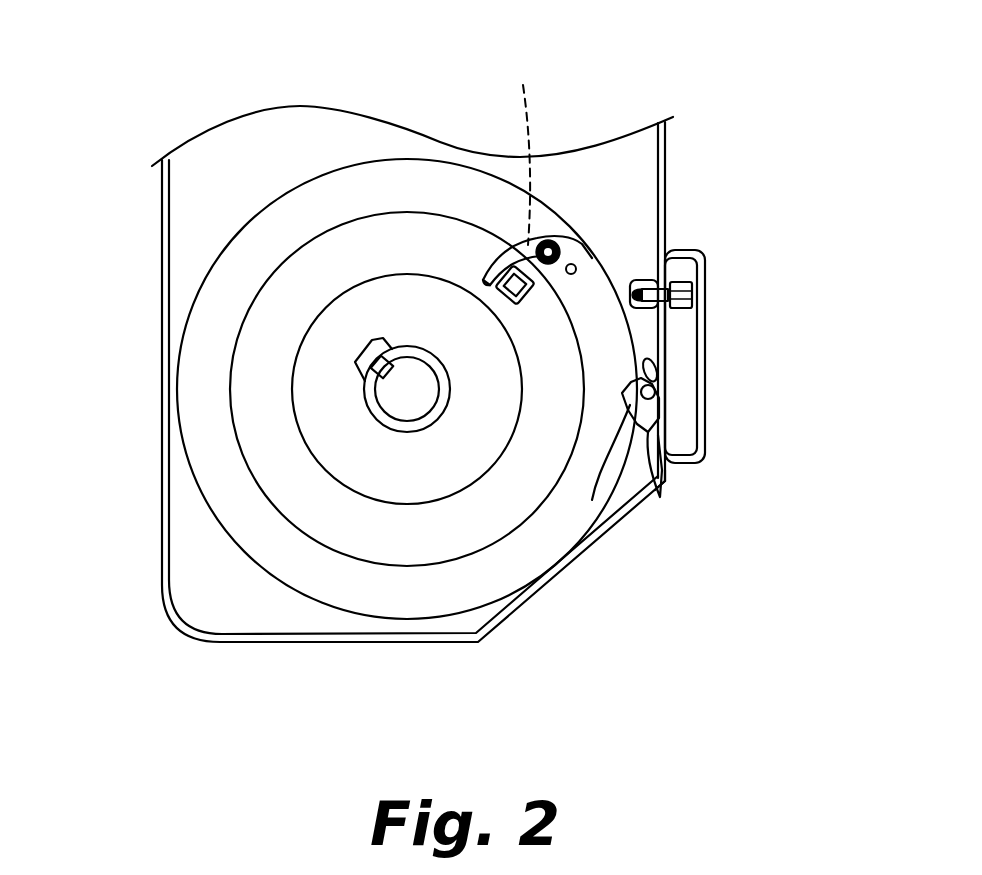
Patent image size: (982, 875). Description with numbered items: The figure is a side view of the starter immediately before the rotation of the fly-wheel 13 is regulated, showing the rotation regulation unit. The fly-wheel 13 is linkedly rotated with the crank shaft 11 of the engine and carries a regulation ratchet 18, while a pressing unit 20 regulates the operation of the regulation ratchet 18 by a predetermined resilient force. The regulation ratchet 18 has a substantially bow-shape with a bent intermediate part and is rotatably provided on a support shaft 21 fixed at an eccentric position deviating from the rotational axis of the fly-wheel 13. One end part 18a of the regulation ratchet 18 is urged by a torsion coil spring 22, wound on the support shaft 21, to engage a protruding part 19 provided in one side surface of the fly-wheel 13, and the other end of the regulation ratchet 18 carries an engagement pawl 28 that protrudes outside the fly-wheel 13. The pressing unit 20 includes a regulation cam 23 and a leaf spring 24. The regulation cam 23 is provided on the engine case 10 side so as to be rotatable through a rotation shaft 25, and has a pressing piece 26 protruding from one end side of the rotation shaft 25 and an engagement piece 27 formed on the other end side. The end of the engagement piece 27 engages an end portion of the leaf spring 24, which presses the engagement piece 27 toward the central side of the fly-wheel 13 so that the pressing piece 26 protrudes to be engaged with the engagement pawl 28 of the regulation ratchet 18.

The engine case 10 is at (617, 535).
The crank shaft 11 is at (407, 397).
The fly-wheel 13 is at (305, 178).
The regulation ratchet 18 is at (522, 247).
The one end part of the regulation ratchet 18a is at (495, 262).
The protruding part 19 is at (503, 297).
The pressing unit 20 is at (807, 353).
The support shaft 21 is at (552, 242).
The torsion coil spring 22 is at (523, 147).
The regulation cam 23 is at (656, 410).
The leaf spring 24 is at (668, 388).
The rotation shaft 25 is at (648, 370).
The pressing piece 26 is at (592, 500).
The engagement piece 27 is at (661, 486).
The engagement pawl 28 is at (573, 263).